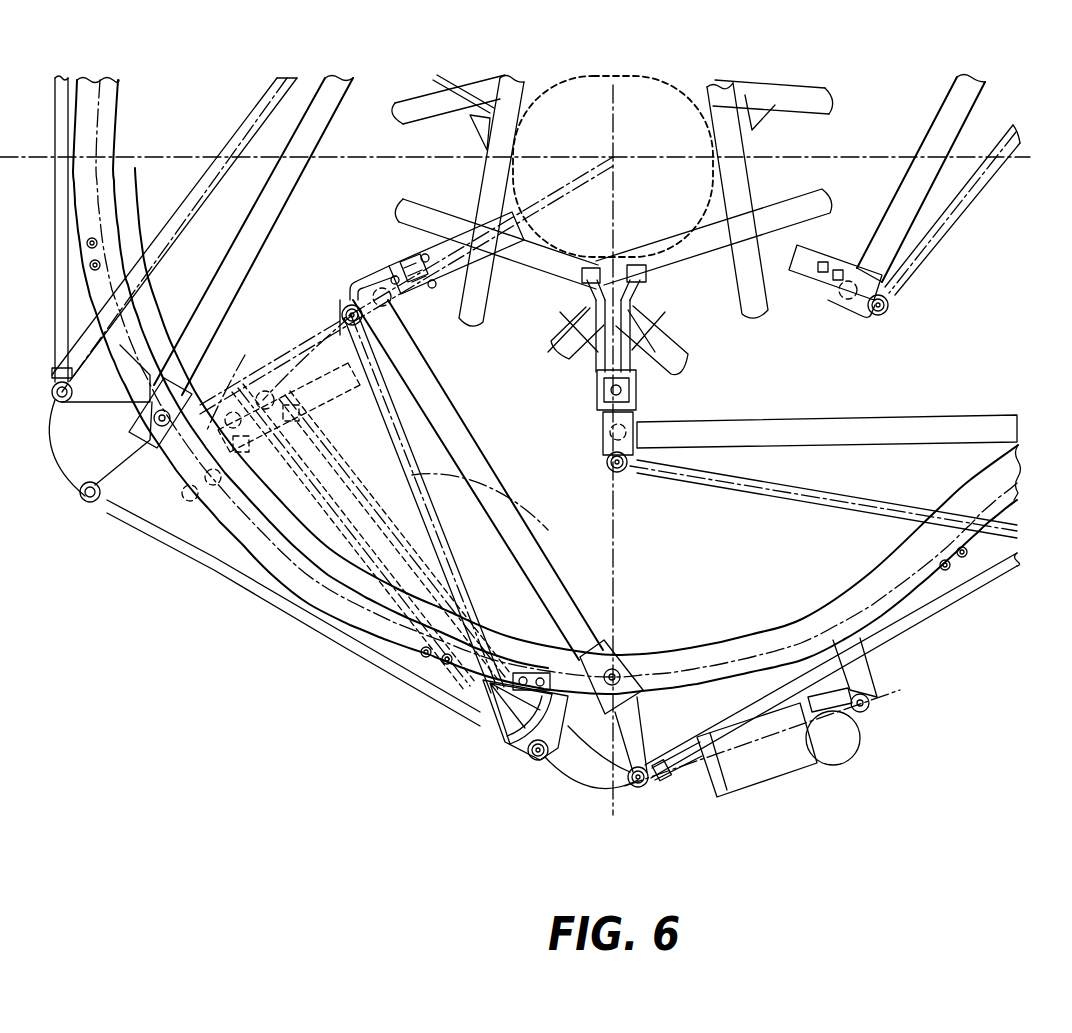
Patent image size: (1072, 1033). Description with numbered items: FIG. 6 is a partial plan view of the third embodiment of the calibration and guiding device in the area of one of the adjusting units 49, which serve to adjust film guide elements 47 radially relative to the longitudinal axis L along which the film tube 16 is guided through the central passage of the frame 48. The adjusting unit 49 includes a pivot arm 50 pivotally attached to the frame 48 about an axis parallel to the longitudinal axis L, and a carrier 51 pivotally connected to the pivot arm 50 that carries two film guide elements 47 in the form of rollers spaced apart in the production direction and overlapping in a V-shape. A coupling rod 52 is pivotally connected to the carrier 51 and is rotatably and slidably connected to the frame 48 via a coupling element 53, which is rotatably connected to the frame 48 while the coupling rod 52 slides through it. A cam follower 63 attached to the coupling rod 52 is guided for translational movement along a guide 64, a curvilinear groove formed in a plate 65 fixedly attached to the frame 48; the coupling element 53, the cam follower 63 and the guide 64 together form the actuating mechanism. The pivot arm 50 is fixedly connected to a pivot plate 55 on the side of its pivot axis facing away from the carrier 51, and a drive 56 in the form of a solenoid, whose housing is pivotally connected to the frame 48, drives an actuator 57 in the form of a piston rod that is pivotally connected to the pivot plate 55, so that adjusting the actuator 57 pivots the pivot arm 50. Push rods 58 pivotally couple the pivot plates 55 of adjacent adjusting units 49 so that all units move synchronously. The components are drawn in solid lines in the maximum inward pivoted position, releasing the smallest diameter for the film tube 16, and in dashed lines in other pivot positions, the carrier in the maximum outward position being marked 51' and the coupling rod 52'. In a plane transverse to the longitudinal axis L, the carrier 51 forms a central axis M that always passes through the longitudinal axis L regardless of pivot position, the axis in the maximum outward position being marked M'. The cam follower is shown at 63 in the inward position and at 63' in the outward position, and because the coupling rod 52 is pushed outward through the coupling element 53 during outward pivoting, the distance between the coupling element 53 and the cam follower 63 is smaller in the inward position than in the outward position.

The longitudinal axis L is at (614, 158).
The film tube 16 is at (523, 95).
The central axis M is at (496, 229).
The central axis in maximum outwardly pivoted position M' is at (628, 285).
The film guide elements 47 is at (663, 350).
The frame 48 is at (813, 627).
The adjusting unit 49 is at (541, 482).
The pivot arm 50 is at (483, 477).
The carrier 51 is at (432, 269).
The carrier in maximum outwardly pivoted position 51' is at (271, 408).
The coupling rod 52 is at (466, 502).
The coupling rod in outwardly pivoted position 52' is at (362, 537).
The coupling element 53 is at (490, 632).
The pivot plate 55 is at (588, 780).
The drive 56 is at (780, 763).
The actuator 57 is at (682, 770).
The push rods 58 is at (297, 613).
The cam follower 63 is at (517, 737).
The cam follower in maximum outwardly pivoted position 63' is at (636, 771).
The guide 64 is at (538, 760).
The plate 65 is at (490, 693).